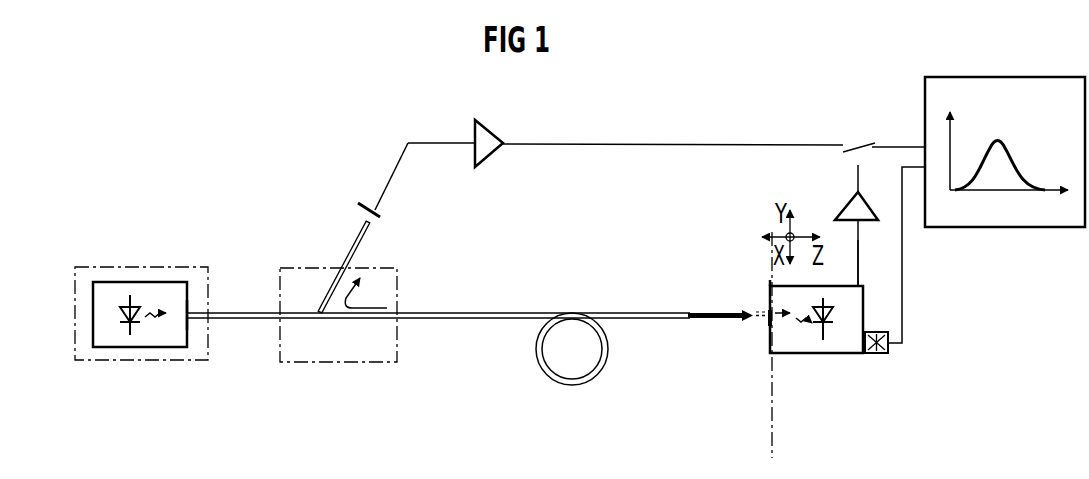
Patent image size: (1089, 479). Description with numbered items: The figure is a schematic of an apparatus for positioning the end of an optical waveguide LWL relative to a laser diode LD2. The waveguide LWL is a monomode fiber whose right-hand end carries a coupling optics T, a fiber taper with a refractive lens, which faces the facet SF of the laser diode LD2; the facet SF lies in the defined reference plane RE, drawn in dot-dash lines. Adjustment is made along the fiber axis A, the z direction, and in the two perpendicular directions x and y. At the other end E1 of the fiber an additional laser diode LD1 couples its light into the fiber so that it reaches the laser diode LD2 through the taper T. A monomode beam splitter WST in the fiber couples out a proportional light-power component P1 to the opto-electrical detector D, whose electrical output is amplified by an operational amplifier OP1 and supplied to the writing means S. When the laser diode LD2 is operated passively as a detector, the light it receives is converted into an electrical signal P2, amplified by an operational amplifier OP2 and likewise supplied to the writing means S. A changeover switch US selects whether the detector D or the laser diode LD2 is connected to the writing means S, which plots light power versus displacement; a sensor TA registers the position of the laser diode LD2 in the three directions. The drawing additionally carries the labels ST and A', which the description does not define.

The additional laser diode LD1 is at (121, 337).
The other end of the monomode fiber E1 is at (189, 308).
The optical waveguide LWL is at (482, 313).
The axis of the optical fiber A is at (727, 336).
The monomode beam splitter WST is at (397, 338).
The component of light power coupled out at the beam splitter P1 is at (354, 267).
The opto-electrical detector D is at (383, 216).
The operational amplifier OP1 is at (481, 128).
The changeover means or switch US is at (861, 160).
The operational amplifier OP2 is at (843, 225).
The electrical signal P2 is at (872, 263).
The reference plane RE is at (771, 280).
The coupling optics / fiber taper T is at (745, 316).
The end face of fiber ST is at (758, 312).
The facet of the laser diode SF is at (771, 319).
The image of fiber end section A' is at (782, 352).
The laser diode LD2 is at (812, 353).
The sensor TA is at (885, 353).
The writing means S is at (953, 217).